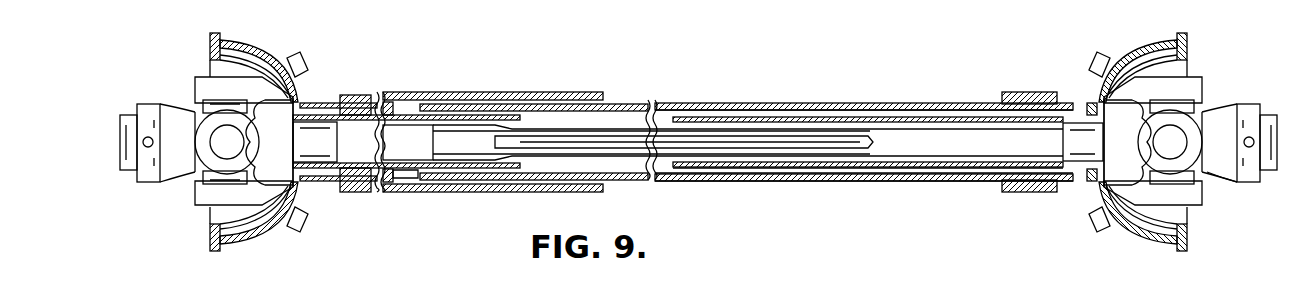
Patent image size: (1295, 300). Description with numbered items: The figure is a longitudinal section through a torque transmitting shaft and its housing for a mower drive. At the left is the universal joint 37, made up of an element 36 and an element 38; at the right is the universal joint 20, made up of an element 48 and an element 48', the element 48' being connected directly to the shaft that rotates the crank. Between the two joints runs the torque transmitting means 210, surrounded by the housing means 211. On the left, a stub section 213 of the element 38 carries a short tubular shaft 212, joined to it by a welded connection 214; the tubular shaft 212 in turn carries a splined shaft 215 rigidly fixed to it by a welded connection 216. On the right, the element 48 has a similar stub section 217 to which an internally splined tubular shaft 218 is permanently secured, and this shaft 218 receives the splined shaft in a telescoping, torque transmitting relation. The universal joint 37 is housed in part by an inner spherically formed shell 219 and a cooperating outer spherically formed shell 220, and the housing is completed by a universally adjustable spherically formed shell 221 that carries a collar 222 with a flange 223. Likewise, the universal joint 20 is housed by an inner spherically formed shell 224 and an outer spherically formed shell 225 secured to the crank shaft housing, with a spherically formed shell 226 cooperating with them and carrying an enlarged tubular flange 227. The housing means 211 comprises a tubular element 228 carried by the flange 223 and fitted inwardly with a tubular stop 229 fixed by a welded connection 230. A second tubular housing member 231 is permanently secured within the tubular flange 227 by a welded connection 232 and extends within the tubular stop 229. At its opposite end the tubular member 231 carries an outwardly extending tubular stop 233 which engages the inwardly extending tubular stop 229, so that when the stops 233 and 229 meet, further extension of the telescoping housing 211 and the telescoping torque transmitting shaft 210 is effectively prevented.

The universal joint 20 is at (1220, 93).
The element of universal joint 37 36 is at (176, 116).
The torque transmitting universal joint 37 is at (186, 190).
The element of universal joint 37 38 is at (205, 88).
The element of universal joint 20 48 is at (1155, 125).
The element of universal joint 20 48' is at (1226, 194).
The torque transmitting means 210 is at (665, 100).
The housing means 211 is at (701, 190).
The short tubular shaft 212 is at (407, 116).
The stub section 213 is at (318, 150).
The welded connection 214 is at (300, 100).
The splined shaft 215 is at (575, 130).
The welded connection 216 is at (525, 117).
The stub section 217 is at (1080, 137).
The internally splined tubular shaft 218 is at (935, 125).
The inner spherically formed shell 219 is at (235, 246).
The outer spherically formed shell 220 is at (270, 238).
The universally adjustable spherically formed shell 221 is at (305, 205).
The collar 222 is at (342, 96).
The flange 223 is at (352, 182).
The inner spherically formed shell 224 is at (1165, 232).
The outer spherically formed shell 225 is at (1135, 230).
The spherically formed shell 226 is at (1095, 200).
The enlarged tubular flange 227 is at (1028, 186).
The tubular element 228 is at (465, 100).
The tubular stop 229 is at (625, 128).
The welded connection 230 is at (603, 94).
The second tubular housing member 231 is at (950, 180).
The welded connection 232 is at (997, 185).
The outwardly extending tubular stop 233 is at (408, 178).